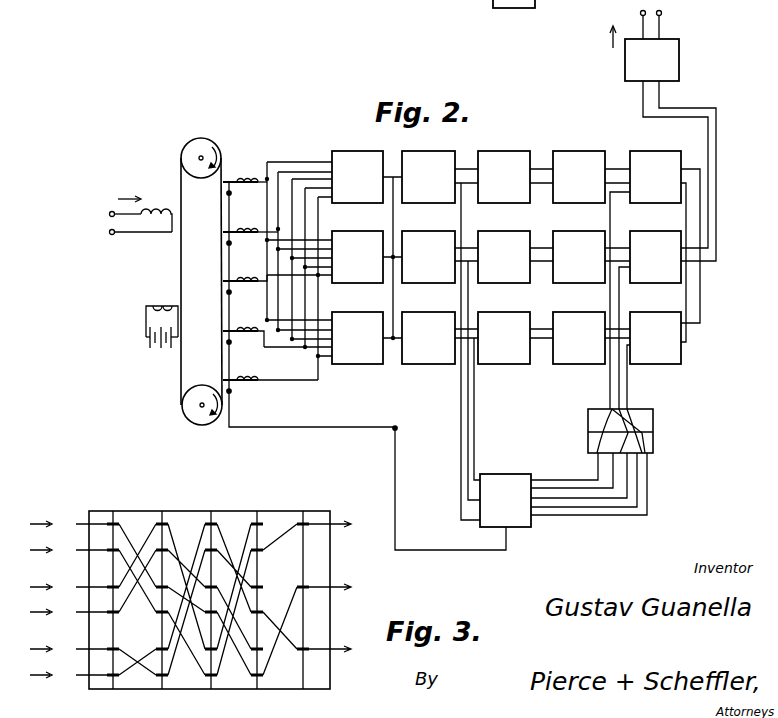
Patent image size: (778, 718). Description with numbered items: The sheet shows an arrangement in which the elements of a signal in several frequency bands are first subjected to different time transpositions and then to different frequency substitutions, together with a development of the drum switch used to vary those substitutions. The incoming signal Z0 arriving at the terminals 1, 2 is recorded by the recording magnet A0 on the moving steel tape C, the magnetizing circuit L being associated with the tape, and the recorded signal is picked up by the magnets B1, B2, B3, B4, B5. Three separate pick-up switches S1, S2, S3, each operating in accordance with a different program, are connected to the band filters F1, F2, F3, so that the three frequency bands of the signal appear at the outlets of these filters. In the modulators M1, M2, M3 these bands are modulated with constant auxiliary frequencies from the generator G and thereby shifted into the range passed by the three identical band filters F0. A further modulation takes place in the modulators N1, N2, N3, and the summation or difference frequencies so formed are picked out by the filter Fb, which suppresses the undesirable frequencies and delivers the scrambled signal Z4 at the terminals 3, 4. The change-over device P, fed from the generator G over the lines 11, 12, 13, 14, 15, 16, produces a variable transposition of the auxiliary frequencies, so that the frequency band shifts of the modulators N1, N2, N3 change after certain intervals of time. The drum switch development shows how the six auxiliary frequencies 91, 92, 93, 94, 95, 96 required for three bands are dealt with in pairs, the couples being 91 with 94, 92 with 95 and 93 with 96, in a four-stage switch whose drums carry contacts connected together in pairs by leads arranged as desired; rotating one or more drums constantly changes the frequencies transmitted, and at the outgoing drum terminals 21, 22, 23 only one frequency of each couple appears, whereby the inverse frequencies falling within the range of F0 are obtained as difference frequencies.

In FIG. 2, the input terminal 1 is at (118, 210).
In FIG. 2, the input terminal 2 is at (134, 244).
In FIG. 2, the output terminal 3 is at (633, 19).
In FIG. 2, the output terminal 4 is at (666, 19).
In FIG. 2, the auxiliary frequency g1 91 is at (474, 403).
In FIG. 3, the auxiliary frequency g1 91 is at (71, 525).
In FIG. 2, the auxiliary frequency g2 92 is at (468, 441).
In FIG. 3, the auxiliary frequency g2 92 is at (71, 588).
In FIG. 2, the auxiliary frequency g3 93 is at (461, 410).
In FIG. 3, the auxiliary frequency g3 93 is at (71, 650).
In FIG. 3, the auxiliary frequency g4 94 is at (71, 551).
In FIG. 3, the auxiliary frequency g5 95 is at (71, 613).
In FIG. 3, the auxiliary frequency g6 96 is at (71, 676).
In FIG. 2, the control line from generator G 11 is at (566, 482).
In FIG. 3, the control line from generator G 11 is at (100, 519).
In FIG. 2, the control line from generator G 12 is at (558, 498).
In FIG. 3, the control line from generator G 12 is at (100, 591).
In FIG. 2, the control line from generator G 13 is at (545, 516).
In FIG. 3, the control line from generator G 13 is at (100, 655).
In FIG. 2, the control line from generator G 14 is at (576, 488).
In FIG. 3, the control line from generator G 14 is at (100, 556).
In FIG. 2, the control line from generator G 15 is at (581, 507).
In FIG. 3, the control line from generator G 15 is at (100, 616).
In FIG. 2, the control line from generator G 16 is at (623, 516).
In FIG. 3, the control line from generator G 16 is at (100, 678).
In FIG. 2, the outgoing drum terminal 21 is at (610, 387).
In FIG. 3, the outgoing drum terminal 21 is at (337, 515).
In FIG. 2, the outgoing drum terminal 22 is at (619, 292).
In FIG. 3, the outgoing drum terminal 22 is at (336, 578).
In FIG. 2, the outgoing drum terminal 23 is at (627, 387).
In FIG. 3, the outgoing drum terminal 23 is at (336, 640).
In FIG. 2, the recording magnet A0 is at (161, 207).
In FIG. 2, the input signal Z0 is at (129, 188).
In FIG. 2, the output signal Z4 is at (600, 39).
In FIG. 2, the moving steel tape C is at (181, 257).
In FIG. 2, the magnetizing source L is at (161, 305).
In FIG. 2, the pick-up magnet B1 is at (254, 372).
In FIG. 2, the pick-up magnet B2 is at (252, 322).
In FIG. 2, the pick-up magnet B3 is at (250, 272).
In FIG. 2, the pick-up magnet B4 is at (250, 223).
In FIG. 2, the pick-up magnet B5 is at (247, 179).
In FIG. 2, the pick-up switch S1 is at (357, 177).
In FIG. 2, the pick-up switch S2 is at (357, 257).
In FIG. 2, the pick-up switch S3 is at (357, 338).
In FIG. 2, the band filter F1 is at (428, 177).
In FIG. 2, the band filter F2 is at (428, 257).
In FIG. 2, the band filter F3 is at (428, 338).
In FIG. 2, the modulator M1 is at (504, 177).
In FIG. 2, the modulator M2 is at (504, 257).
In FIG. 2, the modulator M3 is at (504, 338).
In FIG. 2, the band filter F0 is at (579, 257).
In FIG. 2, the modulator N1 is at (655, 177).
In FIG. 2, the modulator N2 is at (655, 257).
In FIG. 2, the modulator N3 is at (655, 338).
In FIG. 2, the filter Fb is at (652, 60).
In FIG. 2, the generator G is at (505, 500).
In FIG. 2, the change-over device P is at (654, 435).
In FIG. 3, the change-over device P is at (208, 701).